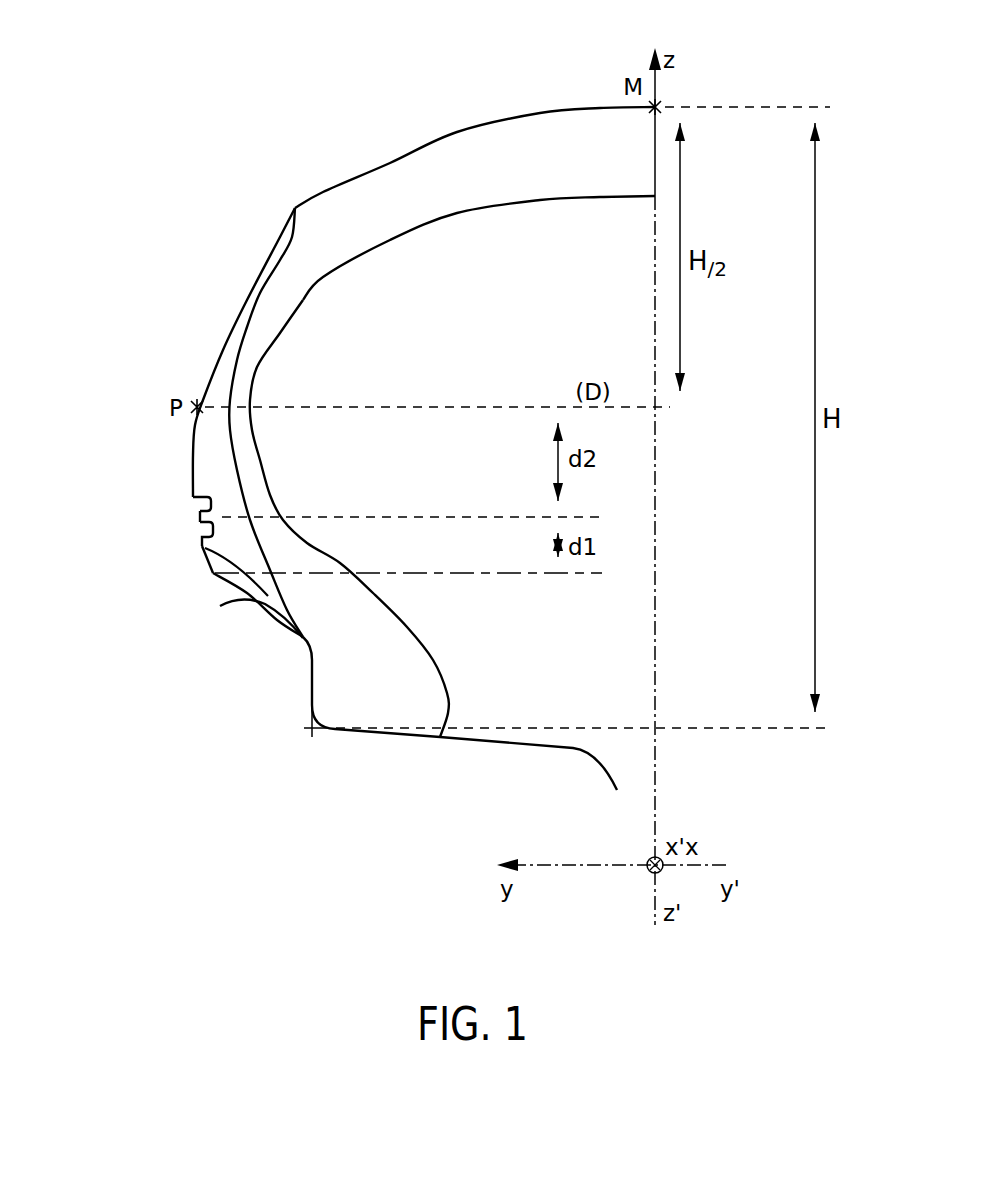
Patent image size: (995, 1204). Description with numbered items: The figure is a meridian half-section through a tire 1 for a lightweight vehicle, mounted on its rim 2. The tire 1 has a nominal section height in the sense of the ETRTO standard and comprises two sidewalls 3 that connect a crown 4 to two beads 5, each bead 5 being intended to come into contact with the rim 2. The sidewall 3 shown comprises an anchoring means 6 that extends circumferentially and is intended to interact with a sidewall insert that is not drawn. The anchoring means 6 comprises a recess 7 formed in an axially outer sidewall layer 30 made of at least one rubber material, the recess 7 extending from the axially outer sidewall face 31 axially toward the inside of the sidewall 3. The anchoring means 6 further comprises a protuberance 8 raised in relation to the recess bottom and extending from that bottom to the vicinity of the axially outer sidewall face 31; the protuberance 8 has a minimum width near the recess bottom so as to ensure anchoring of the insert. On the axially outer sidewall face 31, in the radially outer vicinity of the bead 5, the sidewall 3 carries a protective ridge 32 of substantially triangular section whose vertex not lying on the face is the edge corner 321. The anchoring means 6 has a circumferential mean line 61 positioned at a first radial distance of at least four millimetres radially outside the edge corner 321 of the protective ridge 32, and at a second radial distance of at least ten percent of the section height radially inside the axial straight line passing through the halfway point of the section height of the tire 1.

The tire 1 is at (262, 137).
The rim 2 is at (303, 637).
The sidewall 3 is at (180, 438).
The crown 4 is at (583, 143).
The bead 5 is at (418, 680).
The anchoring means 6 is at (83, 513).
The recess 7 is at (193, 498).
The protuberance 8 is at (197, 527).
The axially outer sidewall layer 30 is at (232, 372).
The axially outer sidewall face 31 is at (190, 470).
The protective ridge 32 is at (207, 560).
The circumferential mean line 61 is at (215, 513).
The edge corner 321 is at (213, 580).